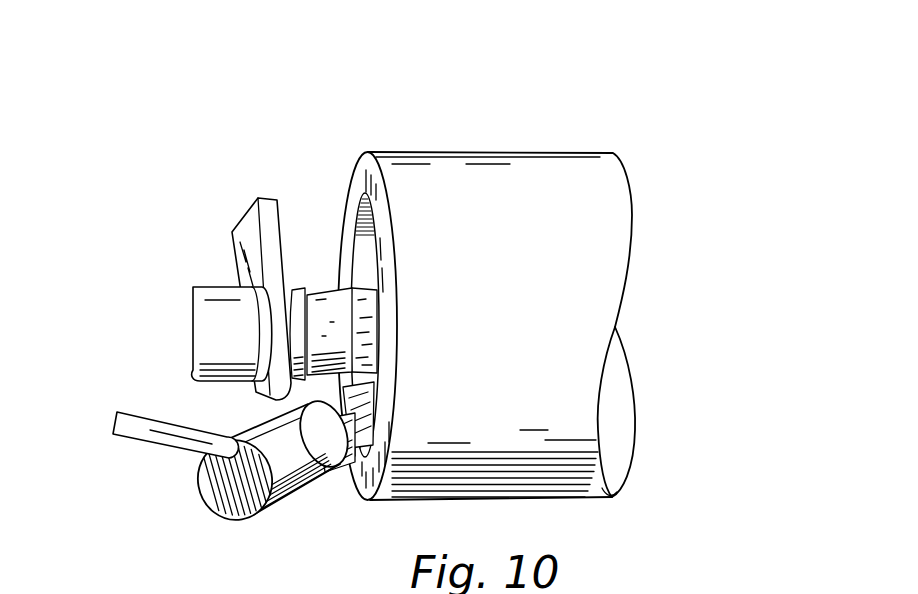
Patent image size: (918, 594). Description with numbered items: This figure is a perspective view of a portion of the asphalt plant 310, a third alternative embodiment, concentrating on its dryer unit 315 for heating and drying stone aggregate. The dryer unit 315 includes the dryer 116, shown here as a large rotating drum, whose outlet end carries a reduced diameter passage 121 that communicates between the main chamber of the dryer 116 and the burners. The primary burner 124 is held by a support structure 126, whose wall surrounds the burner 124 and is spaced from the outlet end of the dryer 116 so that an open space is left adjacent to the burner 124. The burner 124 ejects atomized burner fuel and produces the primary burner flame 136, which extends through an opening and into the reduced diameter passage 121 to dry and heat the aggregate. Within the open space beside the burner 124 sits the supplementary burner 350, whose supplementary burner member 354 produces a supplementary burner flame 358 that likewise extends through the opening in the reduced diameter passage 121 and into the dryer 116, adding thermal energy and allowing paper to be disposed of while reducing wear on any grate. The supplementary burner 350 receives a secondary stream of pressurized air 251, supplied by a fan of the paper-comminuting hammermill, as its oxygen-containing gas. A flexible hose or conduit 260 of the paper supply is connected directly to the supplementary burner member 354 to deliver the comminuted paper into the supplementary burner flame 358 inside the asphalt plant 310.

The asphalt plant 310 is at (535, 264).
The dryer 116 is at (602, 162).
The reduced diameter passage 121 is at (625, 418).
The supplementary burner flame 358 is at (387, 400).
The primary burner flame 136 is at (387, 287).
The supplementary burner member 354 is at (313, 451).
The supplementary burner 350 is at (312, 492).
The dryer unit 315 is at (227, 234).
The support structure 126 is at (250, 212).
The burner 124 is at (212, 290).
The flexible hose or conduit 260 is at (146, 423).
The secondary stream of pressurized air 251 is at (113, 422).